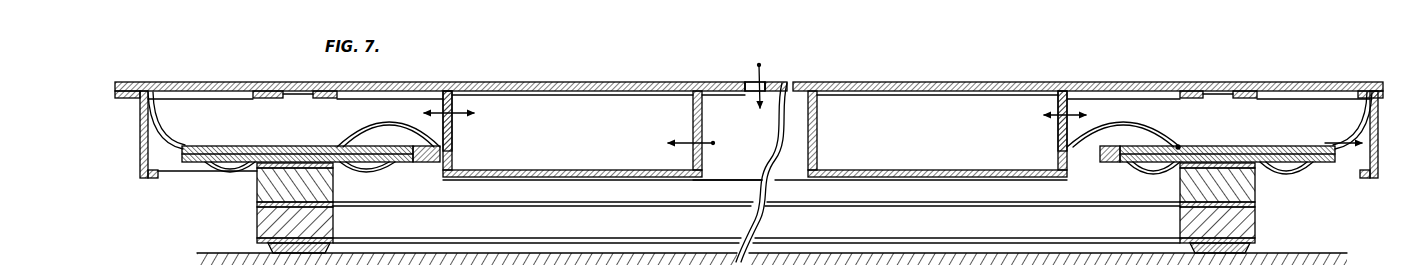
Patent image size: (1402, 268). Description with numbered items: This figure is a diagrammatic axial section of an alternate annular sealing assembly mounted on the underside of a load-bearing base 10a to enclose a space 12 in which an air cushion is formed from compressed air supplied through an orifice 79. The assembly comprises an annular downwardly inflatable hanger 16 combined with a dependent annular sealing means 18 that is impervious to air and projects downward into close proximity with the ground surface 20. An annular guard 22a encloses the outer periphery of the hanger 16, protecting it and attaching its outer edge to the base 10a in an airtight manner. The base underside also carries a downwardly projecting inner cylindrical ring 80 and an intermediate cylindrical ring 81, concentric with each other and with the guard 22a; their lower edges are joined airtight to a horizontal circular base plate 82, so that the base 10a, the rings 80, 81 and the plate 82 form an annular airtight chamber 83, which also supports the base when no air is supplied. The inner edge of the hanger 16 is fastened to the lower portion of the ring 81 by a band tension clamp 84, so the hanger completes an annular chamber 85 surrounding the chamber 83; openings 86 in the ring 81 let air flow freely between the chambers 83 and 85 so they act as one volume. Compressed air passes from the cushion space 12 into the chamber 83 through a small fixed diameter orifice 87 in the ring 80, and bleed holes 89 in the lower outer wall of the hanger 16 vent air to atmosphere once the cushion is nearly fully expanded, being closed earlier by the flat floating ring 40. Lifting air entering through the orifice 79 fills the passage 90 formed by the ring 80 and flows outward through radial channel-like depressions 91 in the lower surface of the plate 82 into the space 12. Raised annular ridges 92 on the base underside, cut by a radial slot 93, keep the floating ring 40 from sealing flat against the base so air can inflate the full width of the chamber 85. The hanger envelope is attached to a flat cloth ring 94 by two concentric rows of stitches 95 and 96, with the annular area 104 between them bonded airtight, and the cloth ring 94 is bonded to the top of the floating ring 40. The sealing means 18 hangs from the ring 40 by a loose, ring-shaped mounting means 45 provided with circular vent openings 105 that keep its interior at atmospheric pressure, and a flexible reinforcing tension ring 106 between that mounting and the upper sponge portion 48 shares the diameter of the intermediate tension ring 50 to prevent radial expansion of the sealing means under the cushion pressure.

The load-bearing base 10a is at (605, 86).
The space 12 is at (917, 230).
The annular downwardly inflatable hanger 16 is at (187, 127).
The annular sealing means 18 is at (252, 210).
The ground surface 20 is at (548, 250).
The annular guard 22a is at (142, 160).
The floating ring 40 is at (330, 147).
The bottom flange 45 is at (195, 178).
The sponge portion 48 is at (1258, 217).
The intermediate tension ring 50 is at (258, 236).
The orifice 79 is at (752, 88).
The inner cylindrical ring 80 is at (715, 93).
The intermediate cylindrical ring 81 is at (454, 143).
The circular base plate 82 is at (665, 178).
The annular airtight chamber 83 is at (597, 144).
The band tension clamp 84 is at (425, 172).
The annular chamber 85 is at (306, 131).
The openings 86 is at (455, 98).
The fixed diameter orifice 87 is at (705, 140).
The bleed holes 89 is at (1340, 140).
The passage 90 is at (742, 126).
The radial channel-like depressions 91 is at (505, 180).
The raised annular ridges 92 is at (1210, 88).
The radial slot 93 is at (305, 88).
The cloth ring 94 is at (1117, 153).
The row of stitches 95 is at (1178, 145).
The row of stitches 96 is at (1300, 140).
The annular area 104 is at (1227, 146).
The vent openings 105 is at (218, 176).
The reinforcing tension ring 106 is at (325, 182).